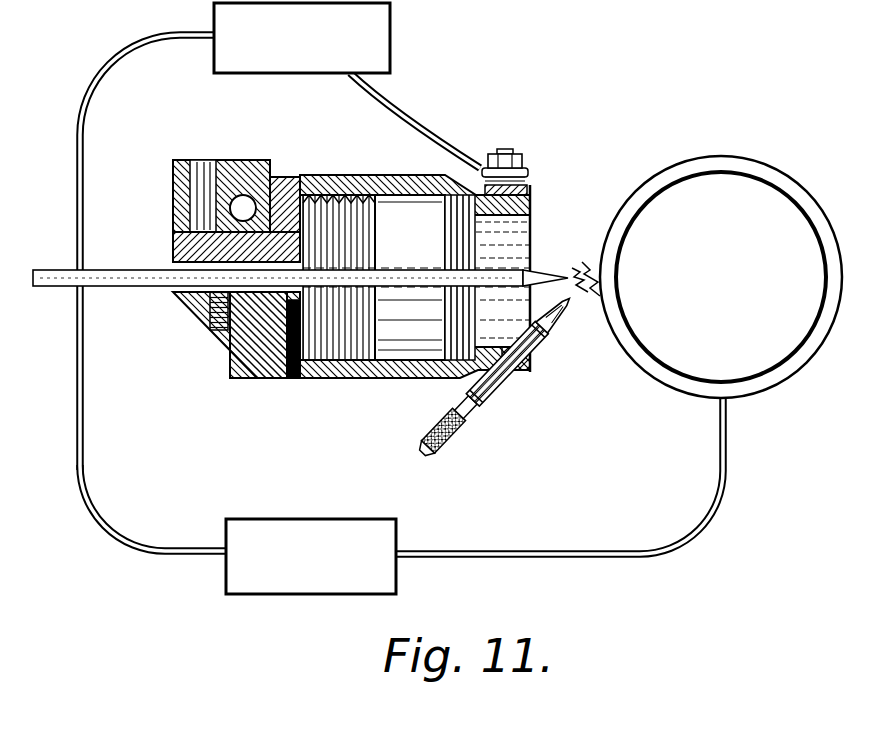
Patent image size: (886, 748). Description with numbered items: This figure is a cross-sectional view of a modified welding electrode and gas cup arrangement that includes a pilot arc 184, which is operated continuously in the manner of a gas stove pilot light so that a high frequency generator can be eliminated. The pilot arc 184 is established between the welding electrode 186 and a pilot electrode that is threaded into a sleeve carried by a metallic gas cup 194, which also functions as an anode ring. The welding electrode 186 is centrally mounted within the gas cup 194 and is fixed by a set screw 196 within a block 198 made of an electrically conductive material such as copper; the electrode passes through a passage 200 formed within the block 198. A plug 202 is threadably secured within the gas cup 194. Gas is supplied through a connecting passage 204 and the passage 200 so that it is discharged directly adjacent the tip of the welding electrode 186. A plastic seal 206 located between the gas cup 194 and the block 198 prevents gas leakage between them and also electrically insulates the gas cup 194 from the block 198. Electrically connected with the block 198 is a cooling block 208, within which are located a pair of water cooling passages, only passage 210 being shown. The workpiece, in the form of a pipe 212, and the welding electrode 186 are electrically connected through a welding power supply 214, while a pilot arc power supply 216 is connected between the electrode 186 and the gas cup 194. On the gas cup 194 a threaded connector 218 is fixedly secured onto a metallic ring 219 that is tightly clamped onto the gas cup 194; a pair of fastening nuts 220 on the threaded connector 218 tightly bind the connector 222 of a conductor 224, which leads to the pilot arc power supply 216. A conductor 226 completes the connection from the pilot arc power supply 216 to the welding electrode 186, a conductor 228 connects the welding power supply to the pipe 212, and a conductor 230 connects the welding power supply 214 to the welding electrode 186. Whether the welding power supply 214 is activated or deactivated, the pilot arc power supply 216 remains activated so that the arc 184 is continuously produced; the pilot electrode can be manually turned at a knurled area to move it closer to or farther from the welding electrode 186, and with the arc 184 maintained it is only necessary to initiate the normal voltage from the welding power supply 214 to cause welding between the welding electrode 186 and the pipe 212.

The pilot arc 184 is at (590, 284).
The welding electrode 186 is at (160, 288).
The gas cup 194 is at (450, 178).
The set screw 196 is at (215, 320).
The block 198 is at (240, 354).
The passage 200 is at (266, 364).
The plug 202 is at (416, 352).
The connecting passage 204 is at (198, 252).
The plastic seal 206 is at (291, 377).
The cooling block 208 is at (174, 193).
The water cooling passage 210 is at (243, 195).
The pipe 212 is at (738, 156).
The welding power supply 214 is at (323, 519).
The pilot arc power supply 216 is at (392, 26).
The threaded connector 218 is at (504, 151).
The metallic ring 219 is at (529, 203).
The fastening nuts 220 is at (521, 164).
The connector 222 is at (522, 162).
The conductor 224 is at (406, 111).
The conductor 226 is at (84, 138).
The conductor 228 is at (686, 530).
The conductor 230 is at (92, 482).